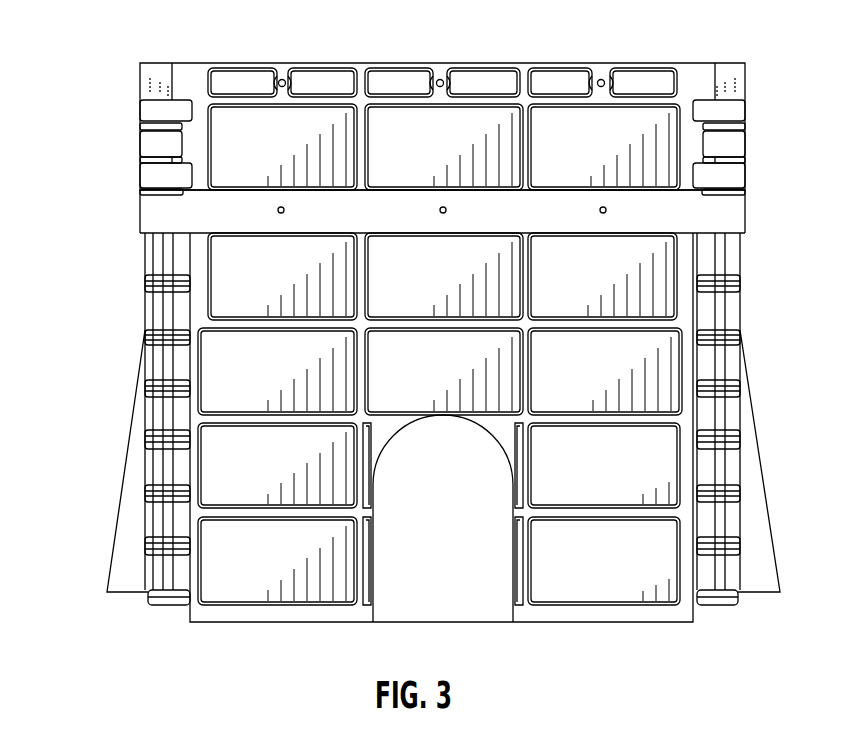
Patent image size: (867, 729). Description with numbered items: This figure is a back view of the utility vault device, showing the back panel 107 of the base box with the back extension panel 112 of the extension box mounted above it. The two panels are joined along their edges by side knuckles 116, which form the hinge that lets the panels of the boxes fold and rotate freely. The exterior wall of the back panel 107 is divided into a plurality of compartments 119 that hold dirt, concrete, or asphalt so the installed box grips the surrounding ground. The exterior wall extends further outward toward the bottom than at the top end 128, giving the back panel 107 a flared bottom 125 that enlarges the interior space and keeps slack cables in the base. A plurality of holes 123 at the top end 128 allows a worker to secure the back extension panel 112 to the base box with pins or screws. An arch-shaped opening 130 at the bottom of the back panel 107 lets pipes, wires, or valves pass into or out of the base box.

The back panel 107 is at (190, 620).
The back extension panel 112 is at (140, 188).
The side knuckles 116 is at (172, 582).
The compartments 119 is at (265, 465).
The holes 123 is at (604, 79).
The flared bottom 125 is at (747, 577).
The top end 128 is at (390, 205).
The opening 130 is at (423, 550).